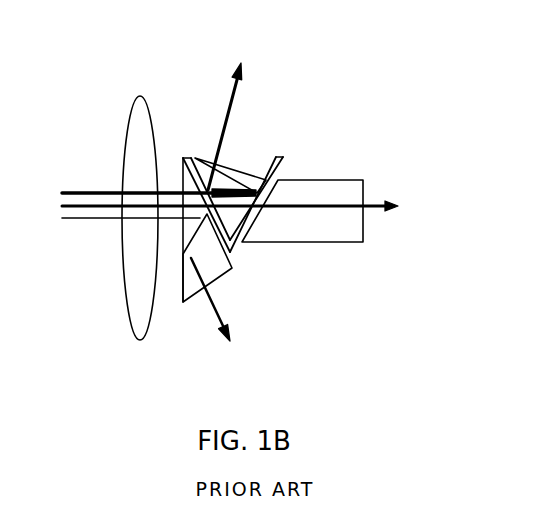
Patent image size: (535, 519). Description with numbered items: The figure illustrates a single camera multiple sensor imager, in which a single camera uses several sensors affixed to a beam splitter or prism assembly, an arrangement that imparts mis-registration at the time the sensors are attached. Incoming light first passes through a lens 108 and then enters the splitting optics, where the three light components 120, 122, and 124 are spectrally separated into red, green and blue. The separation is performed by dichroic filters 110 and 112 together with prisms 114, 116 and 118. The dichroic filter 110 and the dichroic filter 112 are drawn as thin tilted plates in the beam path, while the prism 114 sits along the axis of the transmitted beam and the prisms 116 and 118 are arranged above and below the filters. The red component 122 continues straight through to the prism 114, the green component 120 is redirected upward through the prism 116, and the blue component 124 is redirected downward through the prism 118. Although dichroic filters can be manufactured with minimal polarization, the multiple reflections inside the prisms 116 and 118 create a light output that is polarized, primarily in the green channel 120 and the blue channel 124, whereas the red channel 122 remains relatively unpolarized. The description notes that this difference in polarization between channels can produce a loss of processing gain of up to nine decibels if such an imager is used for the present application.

The lens 108 is at (112, 284).
The dichroic filter 110 is at (182, 140).
The dichroic filter 112 is at (282, 155).
The prism 114 is at (322, 170).
The prism 116 is at (238, 158).
The prism 118 is at (226, 286).
The green light component 120 is at (232, 116).
The red light component 122 is at (246, 201).
The blue light component 124 is at (219, 308).